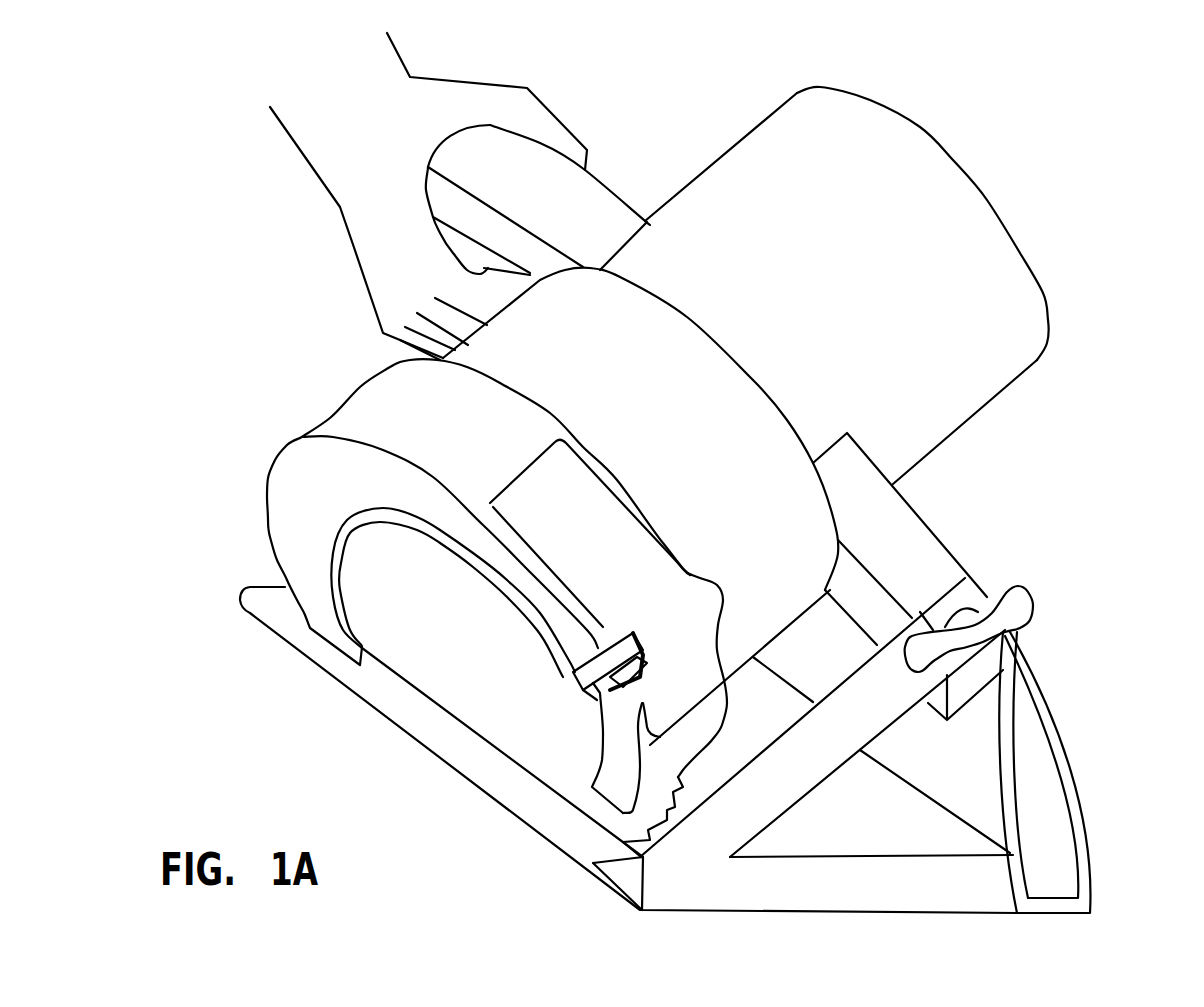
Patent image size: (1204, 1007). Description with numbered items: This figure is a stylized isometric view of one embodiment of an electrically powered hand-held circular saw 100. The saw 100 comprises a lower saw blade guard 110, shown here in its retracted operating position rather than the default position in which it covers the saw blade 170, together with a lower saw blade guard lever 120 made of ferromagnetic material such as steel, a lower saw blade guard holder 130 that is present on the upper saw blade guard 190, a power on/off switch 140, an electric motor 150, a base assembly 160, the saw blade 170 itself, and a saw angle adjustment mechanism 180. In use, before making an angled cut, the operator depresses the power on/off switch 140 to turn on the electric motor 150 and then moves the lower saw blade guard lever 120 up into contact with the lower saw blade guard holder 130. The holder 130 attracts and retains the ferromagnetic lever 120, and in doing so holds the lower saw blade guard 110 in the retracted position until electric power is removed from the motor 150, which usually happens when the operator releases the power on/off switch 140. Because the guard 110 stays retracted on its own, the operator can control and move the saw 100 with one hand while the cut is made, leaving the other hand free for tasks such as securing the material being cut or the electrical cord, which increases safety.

The saw 100 is at (1080, 200).
The lower saw blade guard 110 is at (377, 517).
The lower saw blade guard lever 120 is at (577, 680).
The lower saw blade guard holder 130 is at (635, 547).
The power on/off switch 140 is at (483, 263).
The electric motor 150 is at (993, 397).
The base assembly 160 is at (393, 723).
The saw blade 170 is at (517, 657).
The saw angle adjustment mechanism 180 is at (1033, 603).
The upper saw blade guard 190 is at (350, 408).